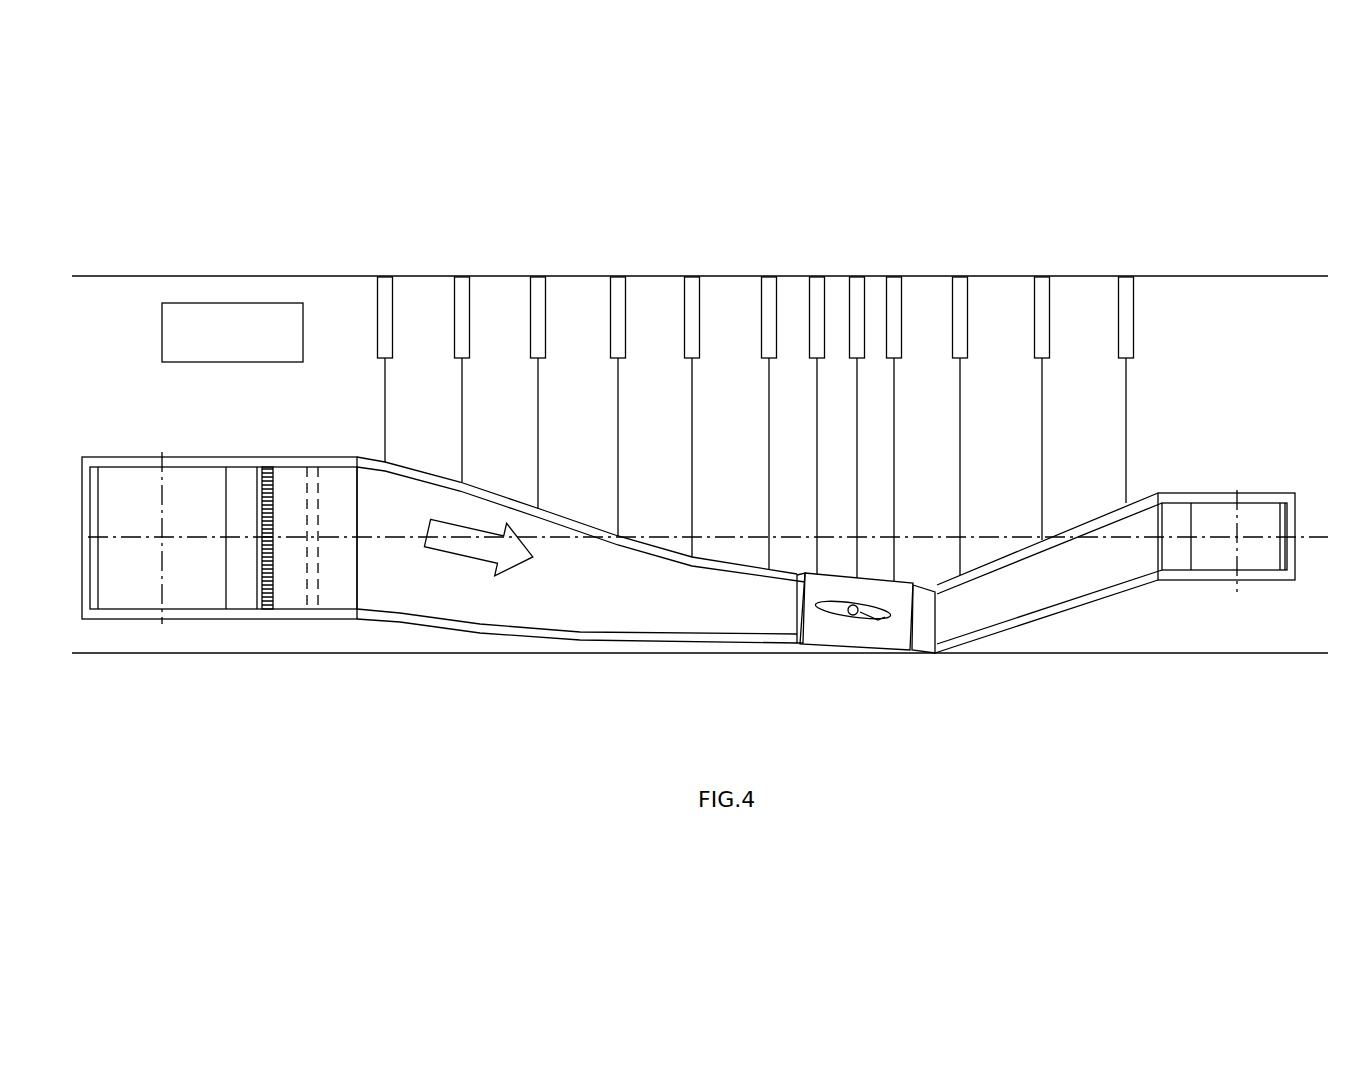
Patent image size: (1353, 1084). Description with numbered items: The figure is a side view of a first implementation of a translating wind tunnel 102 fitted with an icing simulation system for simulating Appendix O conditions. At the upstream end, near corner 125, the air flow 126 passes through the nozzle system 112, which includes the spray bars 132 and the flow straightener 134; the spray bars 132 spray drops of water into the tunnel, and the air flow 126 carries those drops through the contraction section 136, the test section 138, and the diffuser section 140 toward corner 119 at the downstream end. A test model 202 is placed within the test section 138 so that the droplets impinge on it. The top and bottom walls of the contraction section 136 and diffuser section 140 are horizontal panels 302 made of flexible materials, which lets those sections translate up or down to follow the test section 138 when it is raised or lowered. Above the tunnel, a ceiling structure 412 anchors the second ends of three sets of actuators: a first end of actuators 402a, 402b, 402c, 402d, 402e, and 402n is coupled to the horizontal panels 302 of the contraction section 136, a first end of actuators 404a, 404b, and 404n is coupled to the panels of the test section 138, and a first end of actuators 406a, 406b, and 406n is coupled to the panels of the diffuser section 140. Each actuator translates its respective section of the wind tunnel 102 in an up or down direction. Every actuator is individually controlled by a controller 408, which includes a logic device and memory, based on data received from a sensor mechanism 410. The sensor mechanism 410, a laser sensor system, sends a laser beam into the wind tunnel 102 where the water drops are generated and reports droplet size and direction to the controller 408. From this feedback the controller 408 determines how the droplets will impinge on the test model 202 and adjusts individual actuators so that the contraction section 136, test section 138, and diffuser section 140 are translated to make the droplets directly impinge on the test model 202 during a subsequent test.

The wind tunnel 102 is at (1184, 378).
The nozzle system 112 is at (320, 474).
The corner 119 is at (1252, 476).
The corner 125 is at (155, 410).
The air flow 126 is at (491, 562).
The spray bars 132 is at (305, 467).
The flow straightener 134 is at (268, 467).
The contraction section 136 is at (378, 525).
The test section 138 is at (814, 595).
The diffuser section 140 is at (1083, 577).
The test model 202 is at (850, 605).
The horizontal panels 302 is at (584, 630).
The actuator 402a is at (385, 277).
The actuator 402b is at (462, 277).
The actuator 402c is at (538, 277).
The actuator 402d is at (618, 277).
The actuator 402e is at (692, 277).
The actuator 402n is at (769, 277).
The actuator 404a is at (817, 277).
The actuator 404b is at (857, 277).
The actuator 404n is at (894, 277).
The actuator 406a is at (960, 277).
The actuator 406b is at (1042, 277).
The actuator 406n is at (1126, 277).
The controller 408 is at (260, 303).
The sensor mechanism 410 is at (790, 565).
The ceiling structure 412 is at (192, 277).